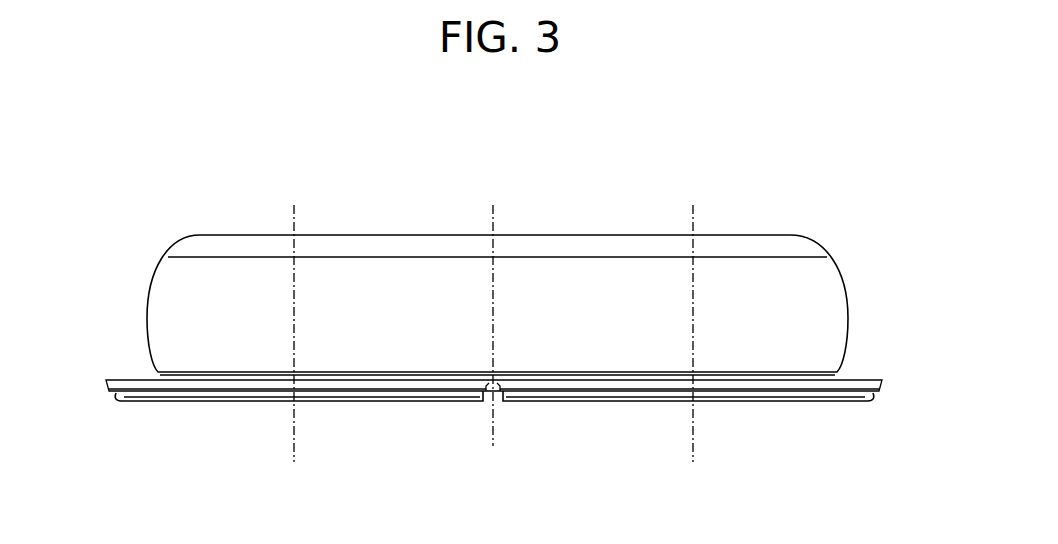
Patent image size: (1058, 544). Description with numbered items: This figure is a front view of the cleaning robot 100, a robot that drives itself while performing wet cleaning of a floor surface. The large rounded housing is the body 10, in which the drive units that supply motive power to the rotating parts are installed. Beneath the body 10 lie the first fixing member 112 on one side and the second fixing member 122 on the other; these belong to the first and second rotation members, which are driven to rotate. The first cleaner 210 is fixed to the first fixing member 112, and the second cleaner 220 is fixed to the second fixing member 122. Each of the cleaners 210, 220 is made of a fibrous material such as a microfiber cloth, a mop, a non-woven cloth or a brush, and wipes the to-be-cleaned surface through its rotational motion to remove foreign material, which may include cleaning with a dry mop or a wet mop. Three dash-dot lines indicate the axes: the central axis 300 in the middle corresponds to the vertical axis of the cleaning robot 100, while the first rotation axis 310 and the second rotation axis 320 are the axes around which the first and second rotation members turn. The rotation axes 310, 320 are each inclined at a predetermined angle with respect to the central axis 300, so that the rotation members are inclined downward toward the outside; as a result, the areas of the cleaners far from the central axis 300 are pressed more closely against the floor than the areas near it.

The cleaning robot 100 is at (471, 141).
The body 10 is at (610, 268).
The first fixing member 112 is at (108, 396).
The second fixing member 122 is at (875, 402).
The first cleaner 210 is at (239, 397).
The second cleaner 220 is at (802, 402).
The central axis 300 is at (495, 428).
The first rotation axis 310 is at (296, 437).
The second rotation axis 320 is at (690, 435).